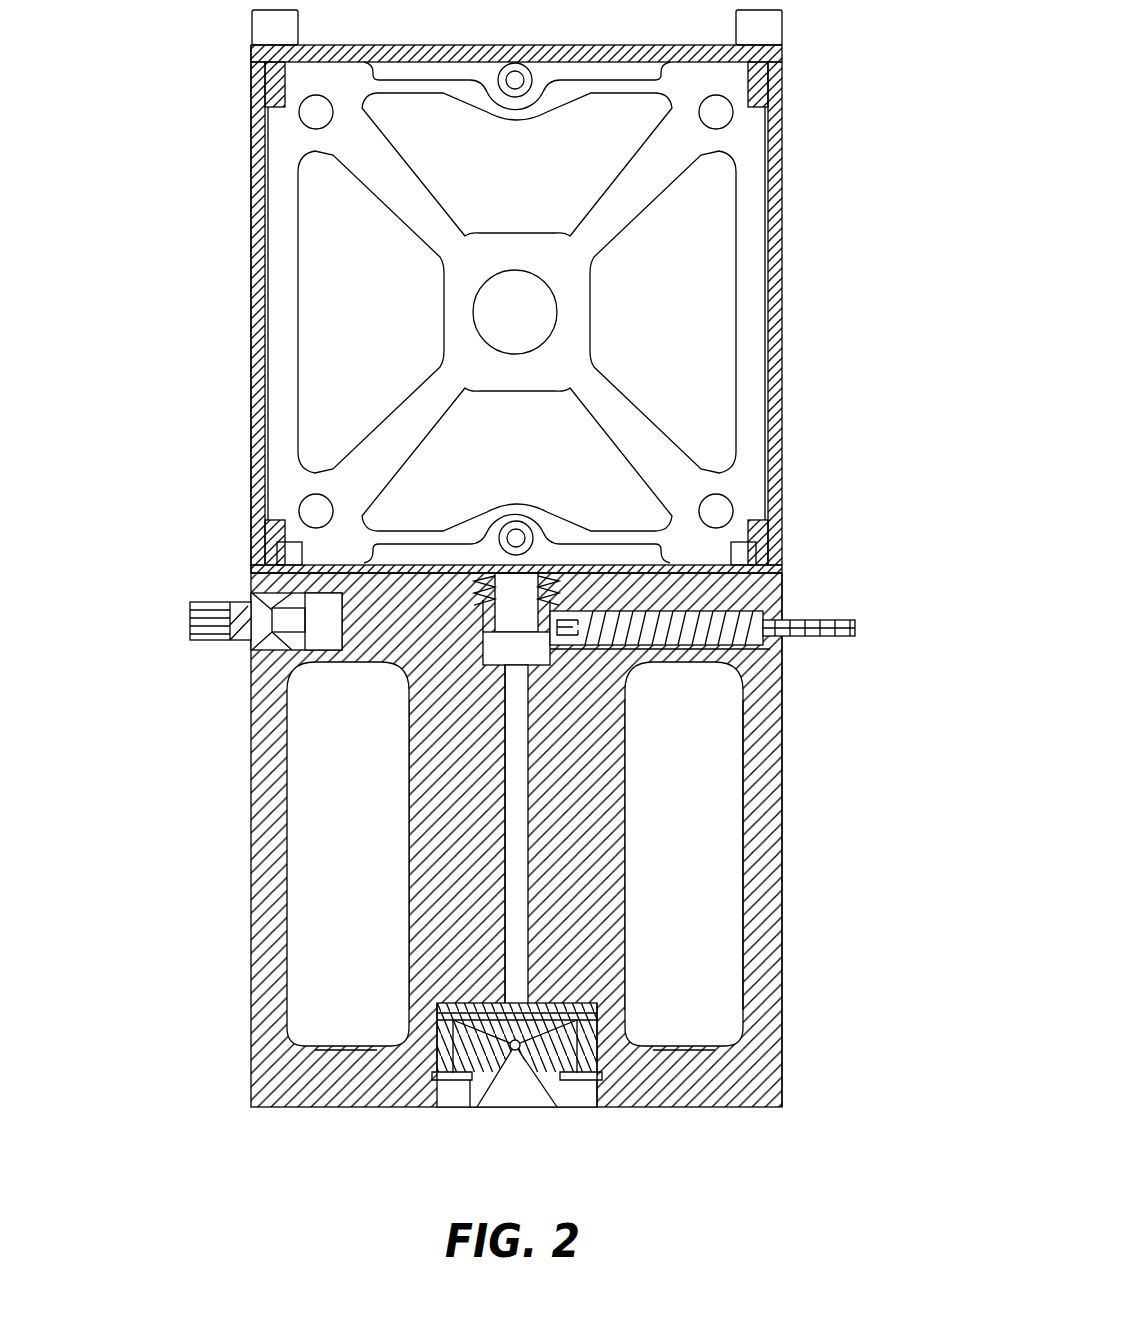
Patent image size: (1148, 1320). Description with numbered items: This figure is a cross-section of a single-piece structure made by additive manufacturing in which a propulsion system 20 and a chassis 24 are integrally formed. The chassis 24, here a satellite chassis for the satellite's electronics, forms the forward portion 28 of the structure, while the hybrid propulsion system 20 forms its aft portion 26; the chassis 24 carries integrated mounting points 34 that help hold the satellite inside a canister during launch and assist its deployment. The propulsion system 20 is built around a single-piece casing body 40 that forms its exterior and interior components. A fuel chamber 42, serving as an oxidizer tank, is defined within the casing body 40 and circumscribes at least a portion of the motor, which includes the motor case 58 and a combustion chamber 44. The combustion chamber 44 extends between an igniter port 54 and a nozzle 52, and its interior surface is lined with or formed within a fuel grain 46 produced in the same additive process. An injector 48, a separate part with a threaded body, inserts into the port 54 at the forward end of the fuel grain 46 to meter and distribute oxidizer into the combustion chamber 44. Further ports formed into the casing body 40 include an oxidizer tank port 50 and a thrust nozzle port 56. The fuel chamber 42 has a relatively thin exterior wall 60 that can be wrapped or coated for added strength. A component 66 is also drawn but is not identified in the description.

The propulsion system 20 is at (150, 182).
The chassis 24 is at (275, 325).
The aft portion 26 is at (800, 1086).
The forward portion 28 is at (800, 50).
The mounting points 34 is at (725, 118).
The casing body 40 is at (783, 988).
The fuel chamber 42 is at (328, 858).
The combustion chamber 44 is at (517, 832).
The fuel grain 46 is at (503, 775).
The injector 48 is at (500, 607).
The oxidizer tank port 50 is at (252, 592).
The nozzle 52 is at (558, 1105).
The igniter port 54 is at (487, 612).
The thrust nozzle port 56 is at (447, 1105).
The motor case 58 is at (455, 942).
The exterior wall 60 is at (763, 893).
The connector 66 is at (190, 630).